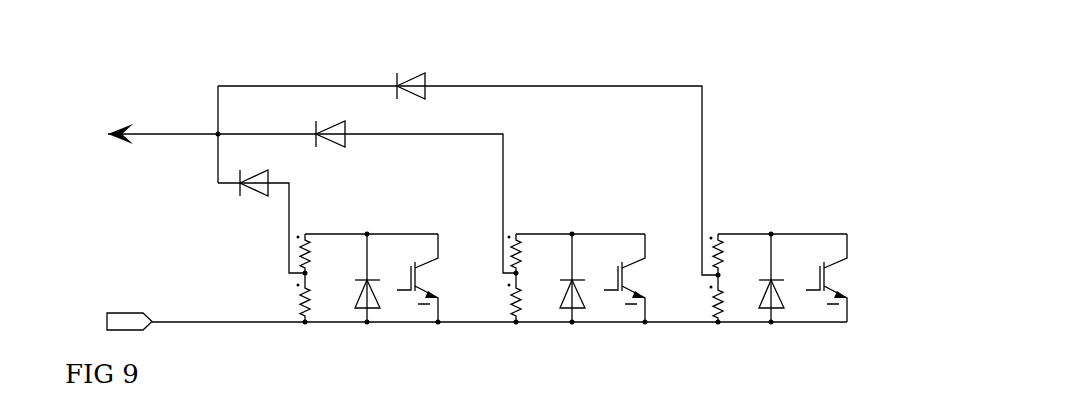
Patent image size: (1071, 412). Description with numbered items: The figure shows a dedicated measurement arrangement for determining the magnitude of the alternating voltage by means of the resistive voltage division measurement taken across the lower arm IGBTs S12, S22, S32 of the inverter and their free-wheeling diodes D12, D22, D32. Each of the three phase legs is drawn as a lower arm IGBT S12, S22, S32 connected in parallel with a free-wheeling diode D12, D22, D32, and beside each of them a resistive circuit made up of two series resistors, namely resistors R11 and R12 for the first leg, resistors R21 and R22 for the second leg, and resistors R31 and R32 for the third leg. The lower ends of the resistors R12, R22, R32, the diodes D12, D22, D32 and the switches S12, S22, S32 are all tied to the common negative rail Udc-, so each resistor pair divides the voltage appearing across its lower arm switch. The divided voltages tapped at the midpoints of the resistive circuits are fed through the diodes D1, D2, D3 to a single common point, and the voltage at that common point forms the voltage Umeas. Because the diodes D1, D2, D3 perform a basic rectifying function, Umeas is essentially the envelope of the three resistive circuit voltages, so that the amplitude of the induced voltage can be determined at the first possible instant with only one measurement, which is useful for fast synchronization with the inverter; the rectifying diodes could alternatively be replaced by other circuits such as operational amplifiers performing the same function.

The envelope voltage Umeas is at (164, 133).
The negative DC link potential Udc- is at (457, 321).
The diode D1 is at (261, 209).
The diode D2 is at (367, 185).
The diode D3 is at (468, 162).
The resistor R11 is at (282, 255).
The resistor R12 is at (282, 299).
The free-wheeling diode D12 is at (350, 278).
The lower arm IGBT S12 is at (427, 279).
The resistor R21 is at (496, 255).
The resistor R22 is at (496, 299).
The free-wheeling diode D22 is at (555, 278).
The lower arm IGBT S22 is at (635, 279).
The resistor R31 is at (697, 256).
The resistor R32 is at (696, 300).
The free-wheeling diode D32 is at (754, 278).
The lower arm IGBT S32 is at (836, 278).